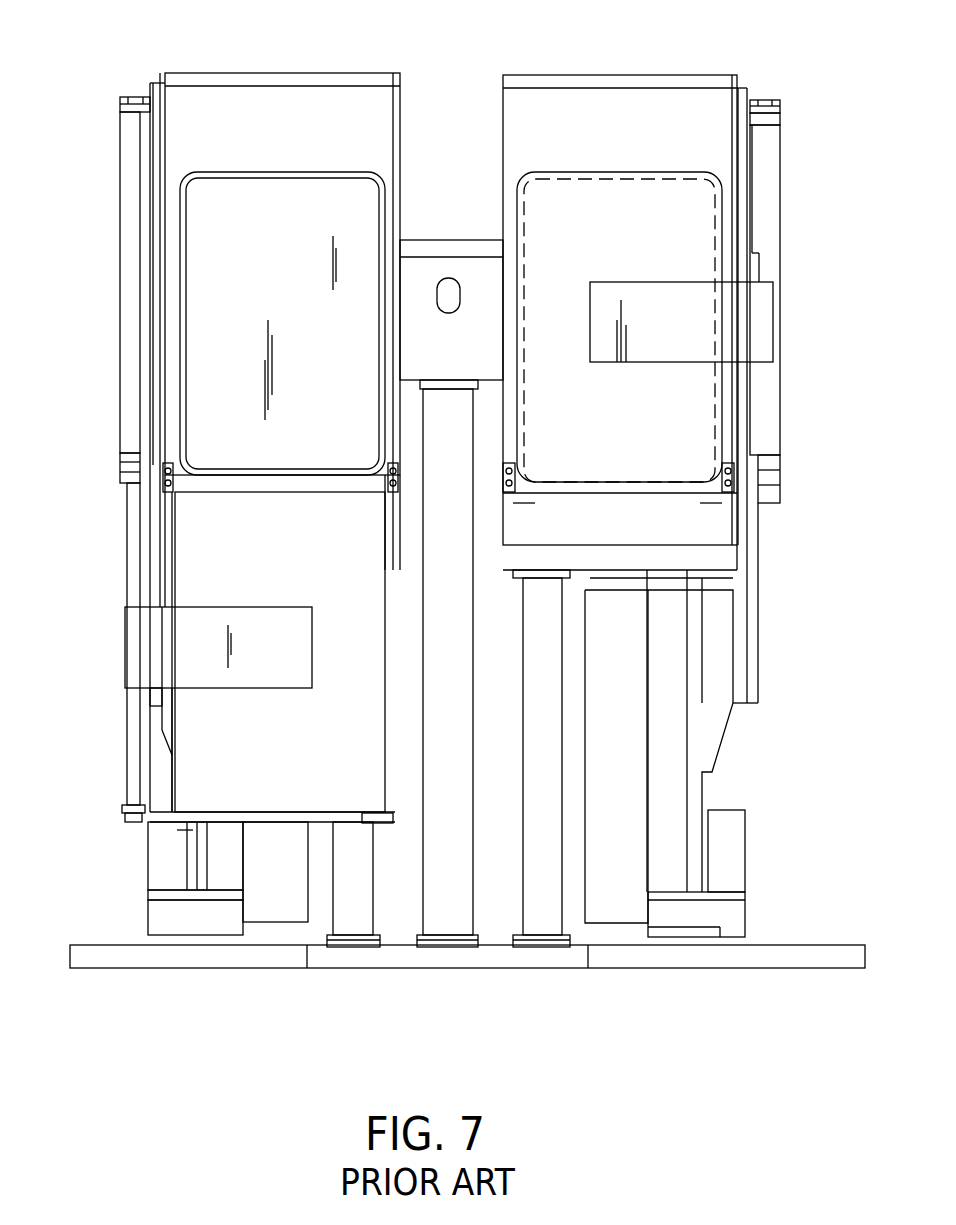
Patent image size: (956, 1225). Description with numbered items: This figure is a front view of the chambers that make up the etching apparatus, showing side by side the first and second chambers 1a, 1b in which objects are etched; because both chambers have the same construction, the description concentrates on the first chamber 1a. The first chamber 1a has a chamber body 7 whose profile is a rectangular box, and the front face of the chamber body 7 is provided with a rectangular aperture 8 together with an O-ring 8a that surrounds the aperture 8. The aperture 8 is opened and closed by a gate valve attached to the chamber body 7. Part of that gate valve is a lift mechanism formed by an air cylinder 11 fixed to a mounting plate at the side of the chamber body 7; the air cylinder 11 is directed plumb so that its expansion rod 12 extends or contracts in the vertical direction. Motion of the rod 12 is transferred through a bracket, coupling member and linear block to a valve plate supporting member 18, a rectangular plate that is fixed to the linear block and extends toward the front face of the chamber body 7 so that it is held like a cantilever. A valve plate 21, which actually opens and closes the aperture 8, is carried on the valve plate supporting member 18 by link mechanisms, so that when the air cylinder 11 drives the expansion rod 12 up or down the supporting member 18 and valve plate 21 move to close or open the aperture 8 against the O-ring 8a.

The first chamber 1a is at (318, 112).
The second chamber 1b is at (677, 116).
The chamber body 7 is at (180, 135).
The O-ring 8a is at (178, 207).
The aperture 8 is at (215, 265).
The air cylinder 11 is at (120, 345).
The expansion rod 12 is at (130, 552).
The valve plate supporting member 18 is at (195, 645).
The valve plate 21 is at (225, 762).